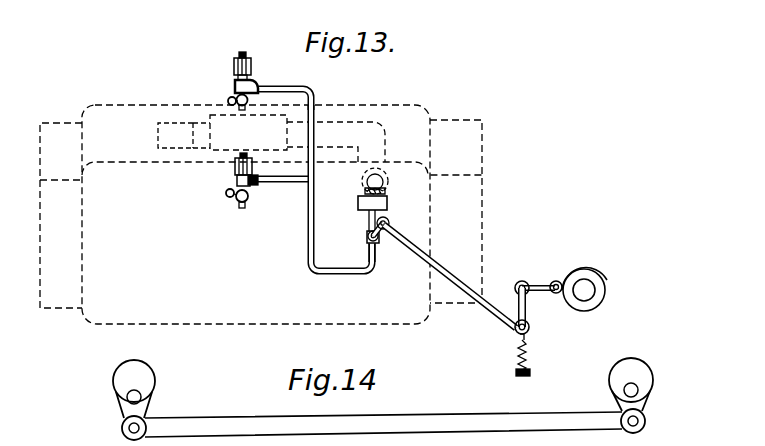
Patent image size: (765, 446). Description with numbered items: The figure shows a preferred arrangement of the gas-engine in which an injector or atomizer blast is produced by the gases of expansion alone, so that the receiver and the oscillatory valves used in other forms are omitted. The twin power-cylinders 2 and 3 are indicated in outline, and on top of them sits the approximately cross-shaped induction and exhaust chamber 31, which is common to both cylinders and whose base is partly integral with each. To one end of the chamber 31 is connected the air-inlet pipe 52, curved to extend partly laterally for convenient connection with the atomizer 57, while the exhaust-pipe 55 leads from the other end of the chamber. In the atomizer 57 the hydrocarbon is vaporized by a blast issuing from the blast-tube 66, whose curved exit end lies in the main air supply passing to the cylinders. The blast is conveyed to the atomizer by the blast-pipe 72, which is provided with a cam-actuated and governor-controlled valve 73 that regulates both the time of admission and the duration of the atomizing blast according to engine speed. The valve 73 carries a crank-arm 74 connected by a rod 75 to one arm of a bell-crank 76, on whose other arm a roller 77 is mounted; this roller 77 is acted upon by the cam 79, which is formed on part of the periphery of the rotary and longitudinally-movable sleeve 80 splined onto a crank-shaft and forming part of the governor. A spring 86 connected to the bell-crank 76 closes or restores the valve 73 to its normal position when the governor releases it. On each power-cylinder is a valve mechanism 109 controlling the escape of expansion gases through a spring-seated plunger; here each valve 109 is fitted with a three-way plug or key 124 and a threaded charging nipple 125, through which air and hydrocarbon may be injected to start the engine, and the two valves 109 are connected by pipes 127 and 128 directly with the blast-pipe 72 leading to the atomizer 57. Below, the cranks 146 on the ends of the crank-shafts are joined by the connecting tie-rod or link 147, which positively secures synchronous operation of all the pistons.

In FIG. 13, the power-cylinder 2 is at (282, 214).
In FIG. 13, the power-cylinder 3 is at (261, 214).
In FIG. 13, the induction and exhaust chamber 31 is at (284, 138).
In FIG. 13, the air-inlet pipe 52 is at (361, 178).
In FIG. 13, the exhaust-pipe 55 is at (184, 135).
In FIG. 13, the atomizer 57 is at (386, 203).
In FIG. 13, the blast-tube 66 is at (381, 188).
In FIG. 13, the blast-pipe 72 is at (368, 218).
In FIG. 13, the cam-actuated and governor-controlled valve 73 is at (386, 233).
In FIG. 13, the crank-arm 74 is at (368, 233).
In FIG. 13, the rod 75 is at (439, 270).
In FIG. 13, the bell-crank 76 is at (530, 281).
In FIG. 13, the roller 77 is at (557, 293).
In FIG. 13, the cam 79 is at (570, 264).
In FIG. 13, the sleeve 80 is at (596, 290).
In FIG. 13, the spring 86 is at (517, 348).
In FIG. 13, the valve mechanism 109 is at (234, 65).
In FIG. 13, the three-way valve plug or key 124 is at (228, 100).
In FIG. 13, the threaded tubular nipple 125 is at (242, 203).
In FIG. 13, the pipe 127 is at (280, 86).
In FIG. 13, the pipe 128 is at (315, 138).
In FIG. 14, the crank 146 is at (151, 381).
In FIG. 14, the tie-rod or link 147 is at (449, 411).